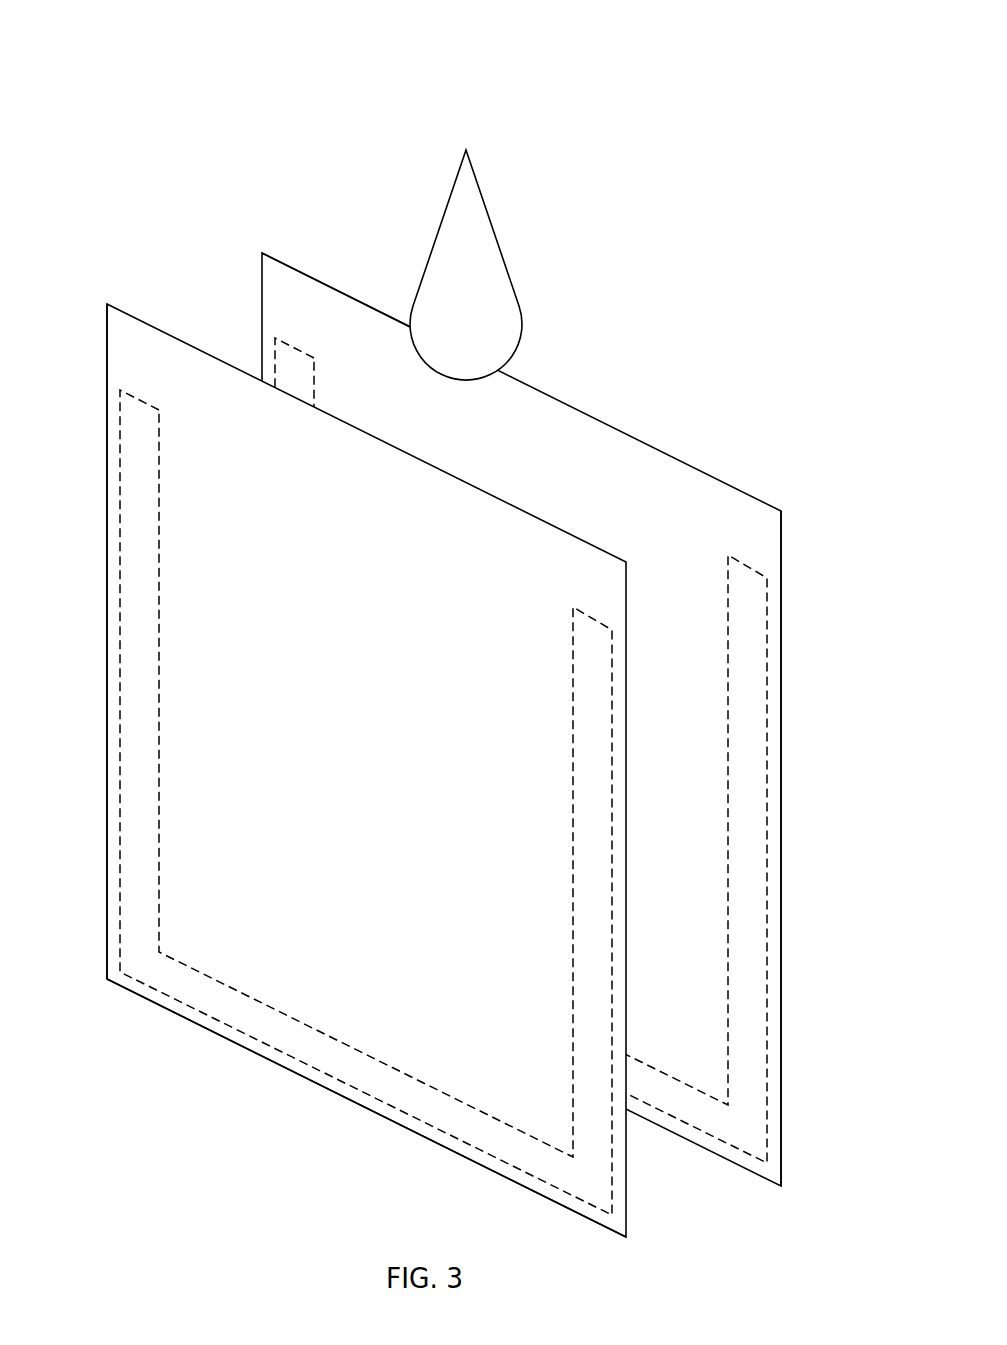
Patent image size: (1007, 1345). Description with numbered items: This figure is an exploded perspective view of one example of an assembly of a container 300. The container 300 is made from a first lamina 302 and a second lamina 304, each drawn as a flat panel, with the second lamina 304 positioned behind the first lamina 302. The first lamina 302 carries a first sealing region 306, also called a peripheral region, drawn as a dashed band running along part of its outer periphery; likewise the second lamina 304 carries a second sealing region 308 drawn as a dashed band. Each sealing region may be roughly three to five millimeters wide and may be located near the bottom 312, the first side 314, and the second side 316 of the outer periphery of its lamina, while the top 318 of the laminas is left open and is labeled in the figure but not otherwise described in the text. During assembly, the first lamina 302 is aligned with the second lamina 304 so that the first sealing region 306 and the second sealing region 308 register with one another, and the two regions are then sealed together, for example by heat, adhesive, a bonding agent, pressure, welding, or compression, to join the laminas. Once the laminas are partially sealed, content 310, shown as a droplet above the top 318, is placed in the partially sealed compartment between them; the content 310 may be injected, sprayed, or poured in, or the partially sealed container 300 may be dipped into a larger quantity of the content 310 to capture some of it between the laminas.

The container 300 is at (450, 626).
The first lamina 302 is at (107, 317).
The second lamina 304 is at (781, 523).
The first sealing region 306 is at (159, 617).
The second sealing region 308 is at (728, 577).
The content 310 is at (500, 250).
The bottom 312 is at (366, 1108).
The first side 314 is at (62, 641).
The second side 316 is at (832, 848).
The top edge 318 is at (441, 305).